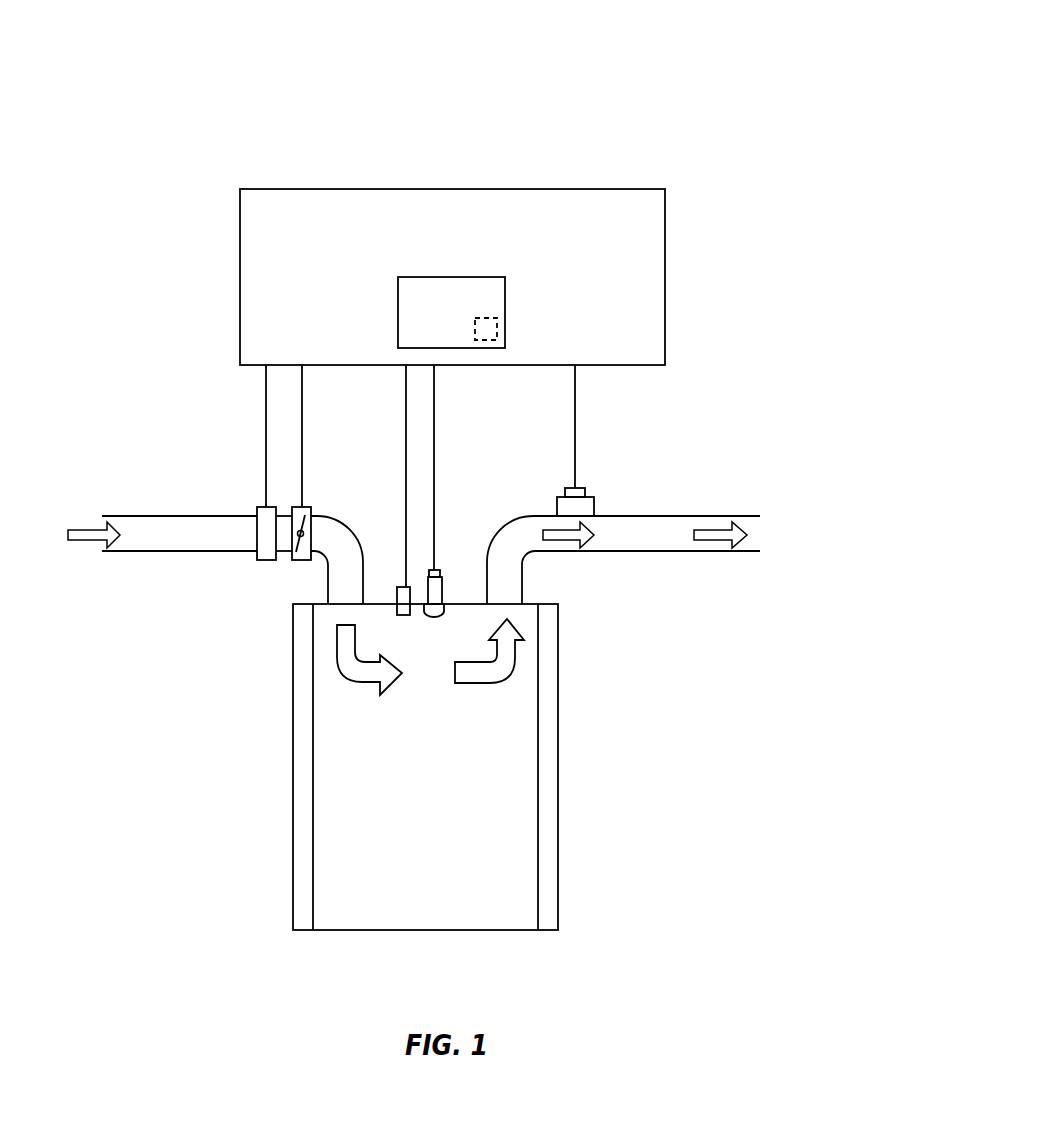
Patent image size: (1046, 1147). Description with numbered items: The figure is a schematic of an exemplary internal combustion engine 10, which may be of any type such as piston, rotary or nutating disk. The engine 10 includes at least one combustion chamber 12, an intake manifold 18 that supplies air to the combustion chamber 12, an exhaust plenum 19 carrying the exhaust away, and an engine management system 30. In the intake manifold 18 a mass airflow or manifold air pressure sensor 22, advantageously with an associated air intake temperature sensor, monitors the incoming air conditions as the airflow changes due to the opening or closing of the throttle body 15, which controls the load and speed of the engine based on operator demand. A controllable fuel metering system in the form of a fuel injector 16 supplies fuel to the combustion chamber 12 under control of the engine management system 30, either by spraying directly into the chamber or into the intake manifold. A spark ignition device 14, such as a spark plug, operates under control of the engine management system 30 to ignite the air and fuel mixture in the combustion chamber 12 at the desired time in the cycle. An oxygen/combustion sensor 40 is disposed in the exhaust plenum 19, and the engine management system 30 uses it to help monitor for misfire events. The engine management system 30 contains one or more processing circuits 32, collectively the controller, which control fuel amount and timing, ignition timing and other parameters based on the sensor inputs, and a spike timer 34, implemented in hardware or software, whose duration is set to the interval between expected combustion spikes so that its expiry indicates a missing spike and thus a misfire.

The internal combustion engine 10 is at (742, 103).
The combustion chamber 12 is at (437, 809).
The spark ignition device 14 is at (443, 587).
The throttle body 15 is at (311, 513).
The fuel injector 16 is at (397, 592).
The intake manifold 18 is at (127, 522).
The exhaust plenum 19 is at (582, 551).
The mass airflow or manifold air pressure sensor 22 is at (257, 510).
The engine management system 30 is at (568, 189).
The processing circuits 32 is at (462, 331).
The spike timer 34 is at (498, 324).
The oxygen/combustion sensor 40 is at (594, 502).